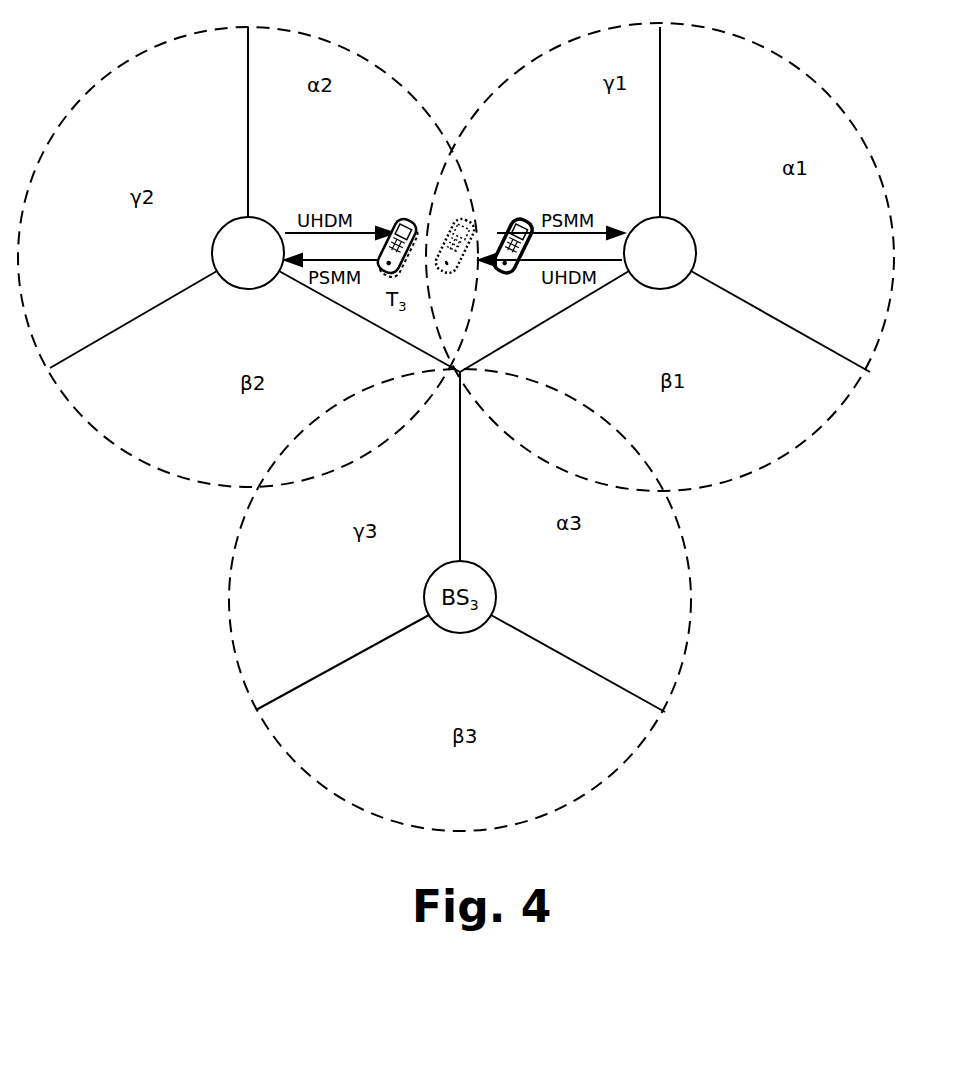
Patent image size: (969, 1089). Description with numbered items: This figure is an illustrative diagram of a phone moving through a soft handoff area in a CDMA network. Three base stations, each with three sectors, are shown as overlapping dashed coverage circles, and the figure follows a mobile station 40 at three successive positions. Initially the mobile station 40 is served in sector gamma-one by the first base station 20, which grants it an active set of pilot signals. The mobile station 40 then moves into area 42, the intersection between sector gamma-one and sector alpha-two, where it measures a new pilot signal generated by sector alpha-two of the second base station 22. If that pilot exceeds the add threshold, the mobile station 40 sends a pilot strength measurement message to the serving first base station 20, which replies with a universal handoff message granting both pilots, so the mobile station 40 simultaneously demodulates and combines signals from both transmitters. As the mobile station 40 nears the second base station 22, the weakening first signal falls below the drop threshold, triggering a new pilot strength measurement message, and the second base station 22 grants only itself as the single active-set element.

The first base station 20 is at (680, 218).
The second base station 22 is at (266, 218).
The mobile station 40 is at (522, 218).
The area 42 is at (447, 160).